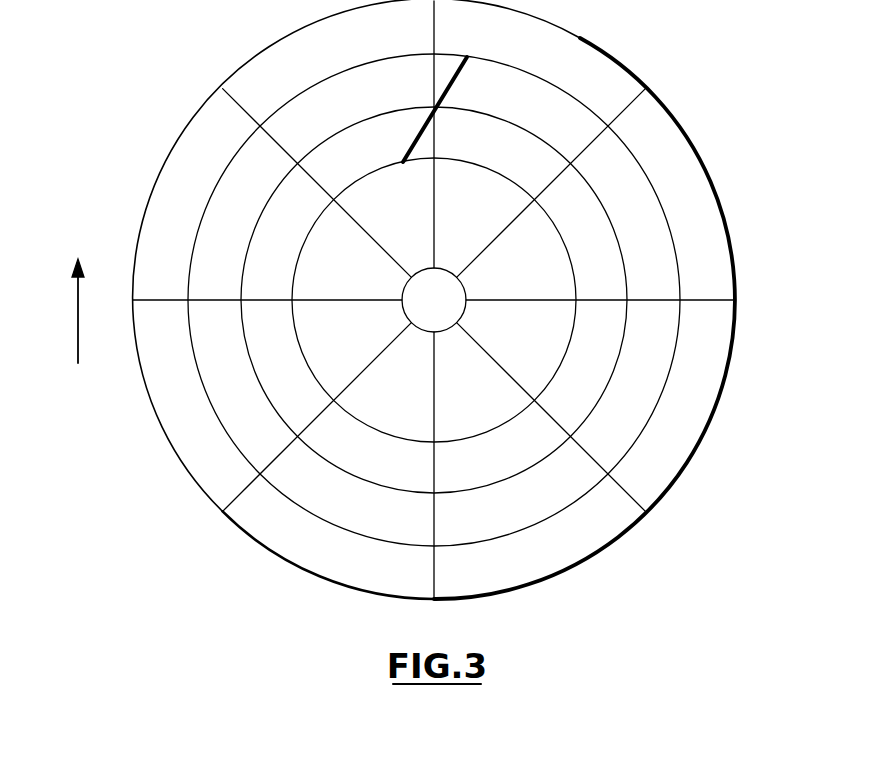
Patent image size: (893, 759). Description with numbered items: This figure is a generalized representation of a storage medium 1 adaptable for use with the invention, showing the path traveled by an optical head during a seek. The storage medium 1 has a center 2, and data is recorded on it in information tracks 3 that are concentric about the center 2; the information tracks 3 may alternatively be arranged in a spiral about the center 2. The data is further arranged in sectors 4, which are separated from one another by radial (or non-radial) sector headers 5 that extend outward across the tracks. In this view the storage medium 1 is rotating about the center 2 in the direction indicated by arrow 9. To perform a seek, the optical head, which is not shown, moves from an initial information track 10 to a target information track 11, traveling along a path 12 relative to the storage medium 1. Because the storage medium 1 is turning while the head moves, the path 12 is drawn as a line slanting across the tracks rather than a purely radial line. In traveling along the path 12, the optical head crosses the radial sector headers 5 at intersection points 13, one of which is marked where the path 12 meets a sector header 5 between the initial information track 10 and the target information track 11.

The storage medium 1 is at (128, 151).
The center 2 is at (408, 290).
The information tracks 3 is at (575, 270).
The sectors 4 is at (555, 52).
The sector headers 5 is at (435, 580).
The arrow 9 is at (78, 313).
The initial information track 10 is at (638, 442).
The target information track 11 is at (570, 353).
The path 12 is at (415, 140).
The intersection points 13 is at (433, 110).